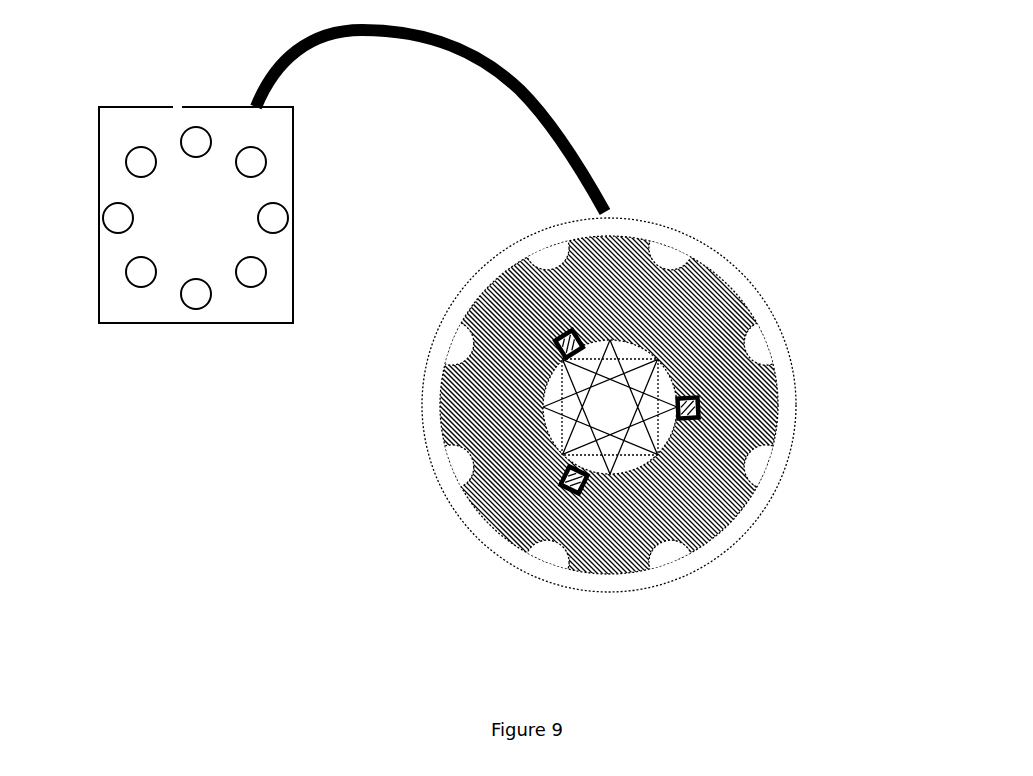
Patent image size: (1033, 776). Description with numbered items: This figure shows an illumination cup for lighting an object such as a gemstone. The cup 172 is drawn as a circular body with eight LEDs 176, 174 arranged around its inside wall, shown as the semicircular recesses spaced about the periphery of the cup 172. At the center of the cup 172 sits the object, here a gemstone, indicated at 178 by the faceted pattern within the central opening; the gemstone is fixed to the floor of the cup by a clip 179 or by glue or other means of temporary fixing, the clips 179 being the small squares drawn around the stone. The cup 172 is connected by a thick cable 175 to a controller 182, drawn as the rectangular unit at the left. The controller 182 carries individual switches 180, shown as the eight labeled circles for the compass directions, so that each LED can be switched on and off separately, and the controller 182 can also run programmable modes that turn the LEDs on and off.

The cup 172 is at (628, 212).
The led 174 is at (667, 257).
The cable 175 is at (573, 128).
The led 176 is at (752, 355).
The central bore 178 is at (628, 413).
The clip 179 is at (560, 337).
The individual switches 180 is at (276, 203).
The controller 182 is at (99, 263).